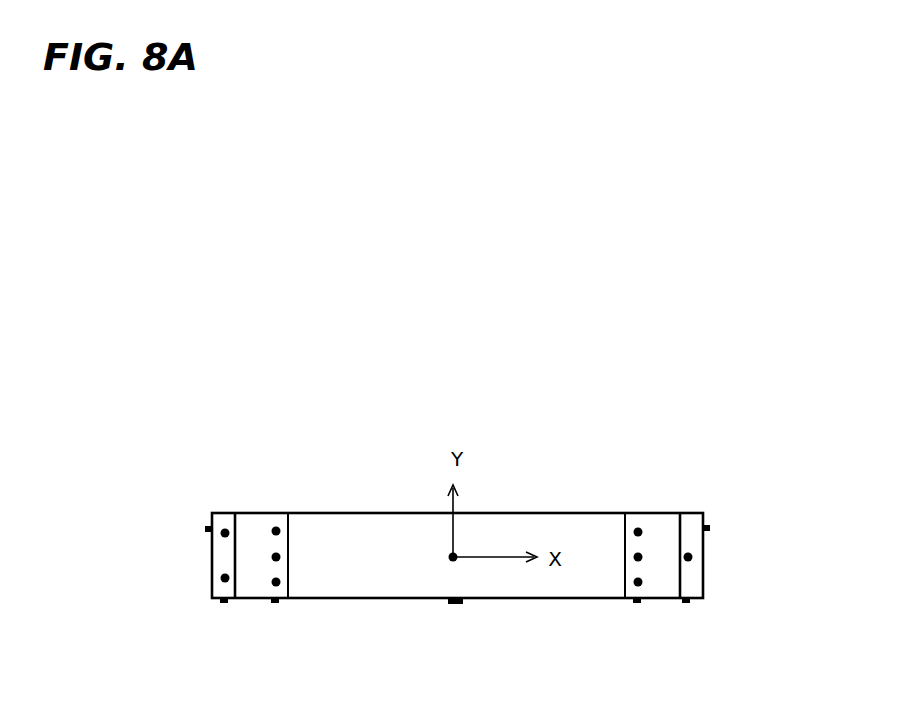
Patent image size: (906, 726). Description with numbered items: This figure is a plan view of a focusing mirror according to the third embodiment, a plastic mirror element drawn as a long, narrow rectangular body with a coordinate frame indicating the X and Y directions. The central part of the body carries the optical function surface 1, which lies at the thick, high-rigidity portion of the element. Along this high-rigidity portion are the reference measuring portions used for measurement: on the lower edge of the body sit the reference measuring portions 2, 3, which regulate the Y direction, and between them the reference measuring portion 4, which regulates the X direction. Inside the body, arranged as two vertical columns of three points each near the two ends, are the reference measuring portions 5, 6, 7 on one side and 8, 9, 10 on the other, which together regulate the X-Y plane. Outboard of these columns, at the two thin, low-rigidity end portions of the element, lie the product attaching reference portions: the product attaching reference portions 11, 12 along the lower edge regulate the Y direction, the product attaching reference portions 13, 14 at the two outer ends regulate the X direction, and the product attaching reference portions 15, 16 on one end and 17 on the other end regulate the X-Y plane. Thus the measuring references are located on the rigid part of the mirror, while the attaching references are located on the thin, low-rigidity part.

The optical function surface 1 is at (390, 522).
The reference measuring portion 2 is at (276, 602).
The reference measuring portion 3 is at (637, 602).
The reference measuring portion 4 is at (455, 603).
The reference measuring portion 5 is at (276, 531).
The reference measuring portion 6 is at (276, 557).
The reference measuring portion 7 is at (276, 582).
The reference measuring portion 8 is at (638, 532).
The reference measuring portion 9 is at (638, 557).
The reference measuring portion 10 is at (638, 582).
The product attaching reference portion 11 is at (225, 602).
The product attaching reference portion 12 is at (686, 602).
The product attaching reference portion 13 is at (207, 529).
The product attaching reference portion 14 is at (708, 528).
The product attaching reference portion 15 is at (225, 533).
The product attaching reference portion 16 is at (225, 578).
The product attaching reference portion 17 is at (688, 557).